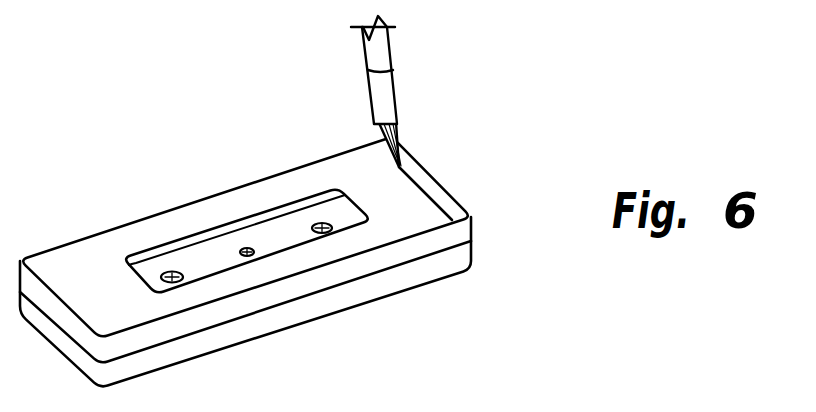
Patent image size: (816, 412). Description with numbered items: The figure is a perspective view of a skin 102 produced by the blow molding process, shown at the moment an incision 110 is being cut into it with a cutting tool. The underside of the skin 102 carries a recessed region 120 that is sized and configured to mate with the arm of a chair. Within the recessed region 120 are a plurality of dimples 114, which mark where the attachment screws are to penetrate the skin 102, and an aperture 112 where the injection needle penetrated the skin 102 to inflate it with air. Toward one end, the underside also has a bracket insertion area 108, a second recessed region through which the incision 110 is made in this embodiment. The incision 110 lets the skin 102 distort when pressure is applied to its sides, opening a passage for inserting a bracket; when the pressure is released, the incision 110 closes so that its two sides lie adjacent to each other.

The skin 102 is at (75, 259).
The bracket insertion area 108 is at (428, 172).
The incision 110 is at (438, 204).
The aperture 112 is at (244, 248).
The dimples 114 is at (169, 272).
The recessed region 120 is at (285, 230).